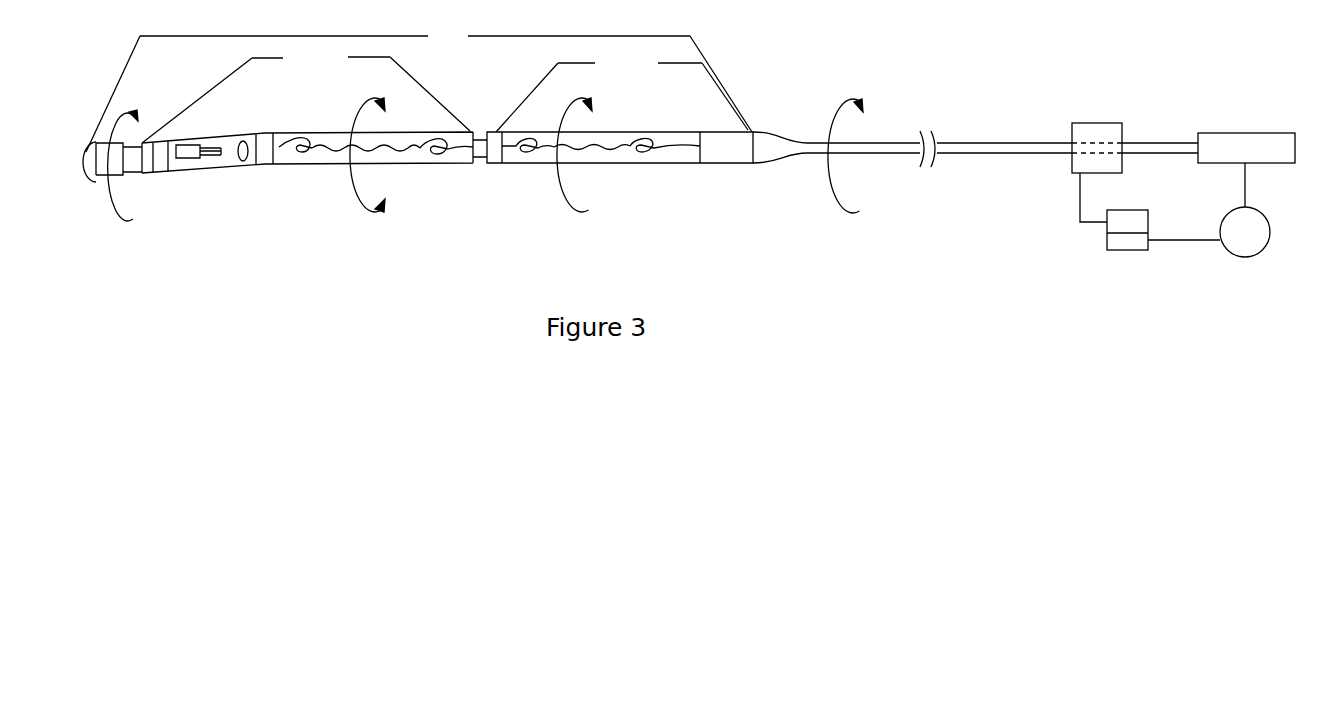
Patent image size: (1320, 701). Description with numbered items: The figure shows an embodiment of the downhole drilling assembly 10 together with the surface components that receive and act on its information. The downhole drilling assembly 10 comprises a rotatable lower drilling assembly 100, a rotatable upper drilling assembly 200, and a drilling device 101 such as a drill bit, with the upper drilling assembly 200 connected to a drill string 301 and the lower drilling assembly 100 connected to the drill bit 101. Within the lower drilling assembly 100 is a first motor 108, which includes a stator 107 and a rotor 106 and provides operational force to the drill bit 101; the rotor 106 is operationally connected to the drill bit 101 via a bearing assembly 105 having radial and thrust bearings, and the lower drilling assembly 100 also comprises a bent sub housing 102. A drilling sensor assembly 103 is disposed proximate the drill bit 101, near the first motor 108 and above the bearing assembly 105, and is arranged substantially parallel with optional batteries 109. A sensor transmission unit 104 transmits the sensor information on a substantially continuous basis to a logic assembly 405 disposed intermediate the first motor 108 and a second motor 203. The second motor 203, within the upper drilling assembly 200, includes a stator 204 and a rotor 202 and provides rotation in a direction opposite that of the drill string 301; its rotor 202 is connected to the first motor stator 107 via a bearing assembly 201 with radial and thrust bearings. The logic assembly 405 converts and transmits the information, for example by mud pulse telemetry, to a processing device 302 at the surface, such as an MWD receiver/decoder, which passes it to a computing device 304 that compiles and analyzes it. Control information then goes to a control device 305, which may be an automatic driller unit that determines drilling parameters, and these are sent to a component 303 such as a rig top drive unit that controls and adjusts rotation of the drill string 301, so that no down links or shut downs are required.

The downhole drilling assembly 10 is at (419, 89).
The lower drilling assembly 100 is at (306, 96).
The upper drilling assembly 200 is at (622, 93).
The drilling device 101 is at (98, 178).
The bent sub housing 102 is at (170, 175).
The drilling sensor assembly 103 is at (223, 164).
The sensor transmission unit 104 is at (245, 134).
The bearing assembly 105 is at (150, 174).
The rotor 106 is at (308, 133).
The stator 107 is at (395, 140).
The first motor 108 is at (390, 164).
The batteries 109 is at (192, 144).
The logic assembly 405 is at (477, 138).
The bearing assembly 201 is at (498, 164).
The rotor 202 is at (513, 164).
The second motor 203 is at (600, 164).
The stator 204 is at (618, 138).
The drill string 301 is at (772, 157).
The processing device 302 is at (1112, 123).
The component 303 is at (1230, 133).
The computing device 304 is at (1120, 251).
The control device 305 is at (1245, 257).